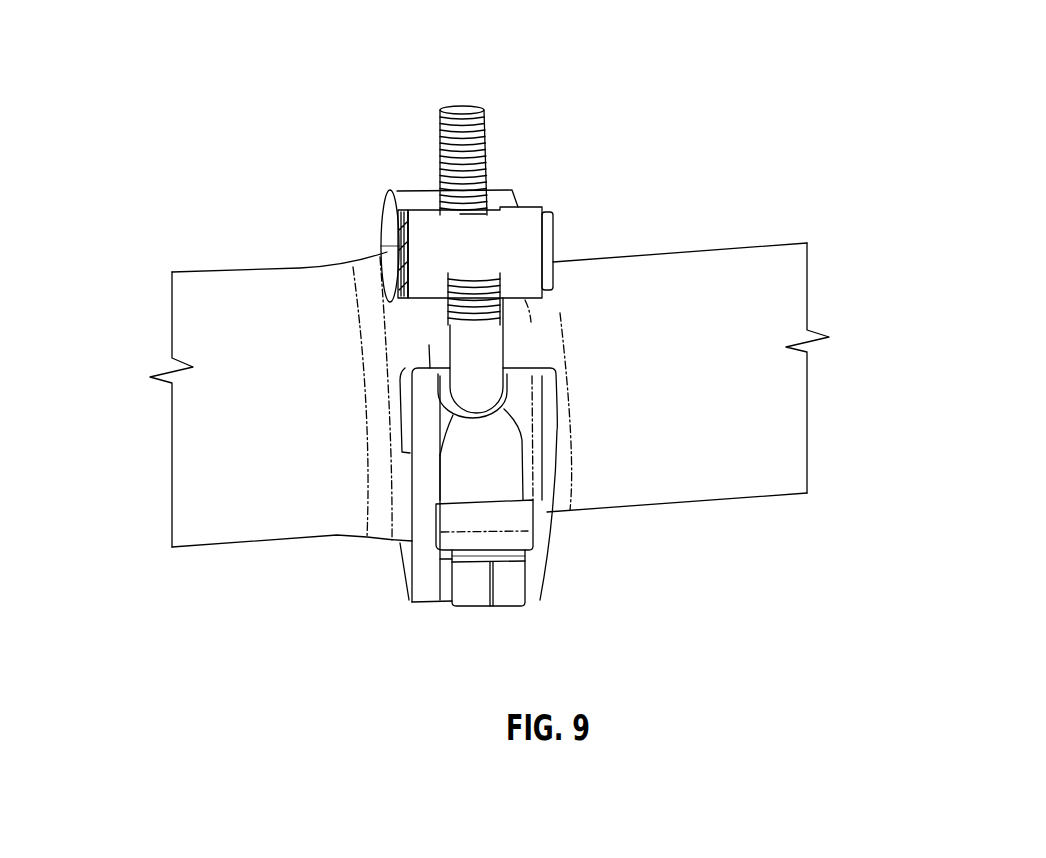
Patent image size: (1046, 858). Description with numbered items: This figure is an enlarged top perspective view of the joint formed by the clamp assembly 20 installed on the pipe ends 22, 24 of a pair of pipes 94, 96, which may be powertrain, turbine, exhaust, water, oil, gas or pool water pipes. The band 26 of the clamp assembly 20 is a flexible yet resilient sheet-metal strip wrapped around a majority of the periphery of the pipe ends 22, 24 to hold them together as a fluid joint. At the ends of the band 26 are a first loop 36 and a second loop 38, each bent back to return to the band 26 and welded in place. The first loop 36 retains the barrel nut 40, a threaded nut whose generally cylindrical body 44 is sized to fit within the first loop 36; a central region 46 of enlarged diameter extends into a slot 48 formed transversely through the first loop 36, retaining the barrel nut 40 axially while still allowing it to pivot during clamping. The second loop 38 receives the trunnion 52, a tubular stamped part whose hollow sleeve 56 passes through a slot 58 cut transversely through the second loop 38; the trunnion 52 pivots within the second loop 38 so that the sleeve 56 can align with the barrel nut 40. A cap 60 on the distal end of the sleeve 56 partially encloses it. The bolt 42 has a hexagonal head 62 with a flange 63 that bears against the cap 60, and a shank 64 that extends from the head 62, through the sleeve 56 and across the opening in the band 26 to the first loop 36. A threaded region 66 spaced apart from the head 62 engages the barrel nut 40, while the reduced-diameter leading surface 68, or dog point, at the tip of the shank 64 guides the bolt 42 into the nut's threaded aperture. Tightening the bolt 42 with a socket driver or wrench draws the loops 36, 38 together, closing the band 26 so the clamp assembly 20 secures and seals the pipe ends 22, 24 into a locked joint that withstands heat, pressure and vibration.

The clamp assembly 20 is at (386, 245).
The pipe end 22 is at (427, 347).
The pipe end 24 is at (574, 225).
The band 26 is at (420, 558).
The first loop 36 is at (492, 166).
The second loop 38 is at (541, 519).
The barrel nut 40 is at (551, 221).
The bolt 42 is at (470, 592).
The barrel nut body 44 is at (545, 258).
The central region 46 is at (485, 223).
The slot 48 is at (395, 203).
The trunnion 52 is at (521, 464).
The sleeve 56 is at (510, 483).
The slot 58 is at (523, 388).
The cap 60 is at (515, 536).
The head 62 is at (443, 617).
The flange 63 is at (462, 558).
The shank 64 is at (483, 372).
The threaded region 66 is at (446, 240).
The leading surface 68 is at (458, 110).
The pipe 94 is at (170, 327).
The pipe 96 is at (809, 300).